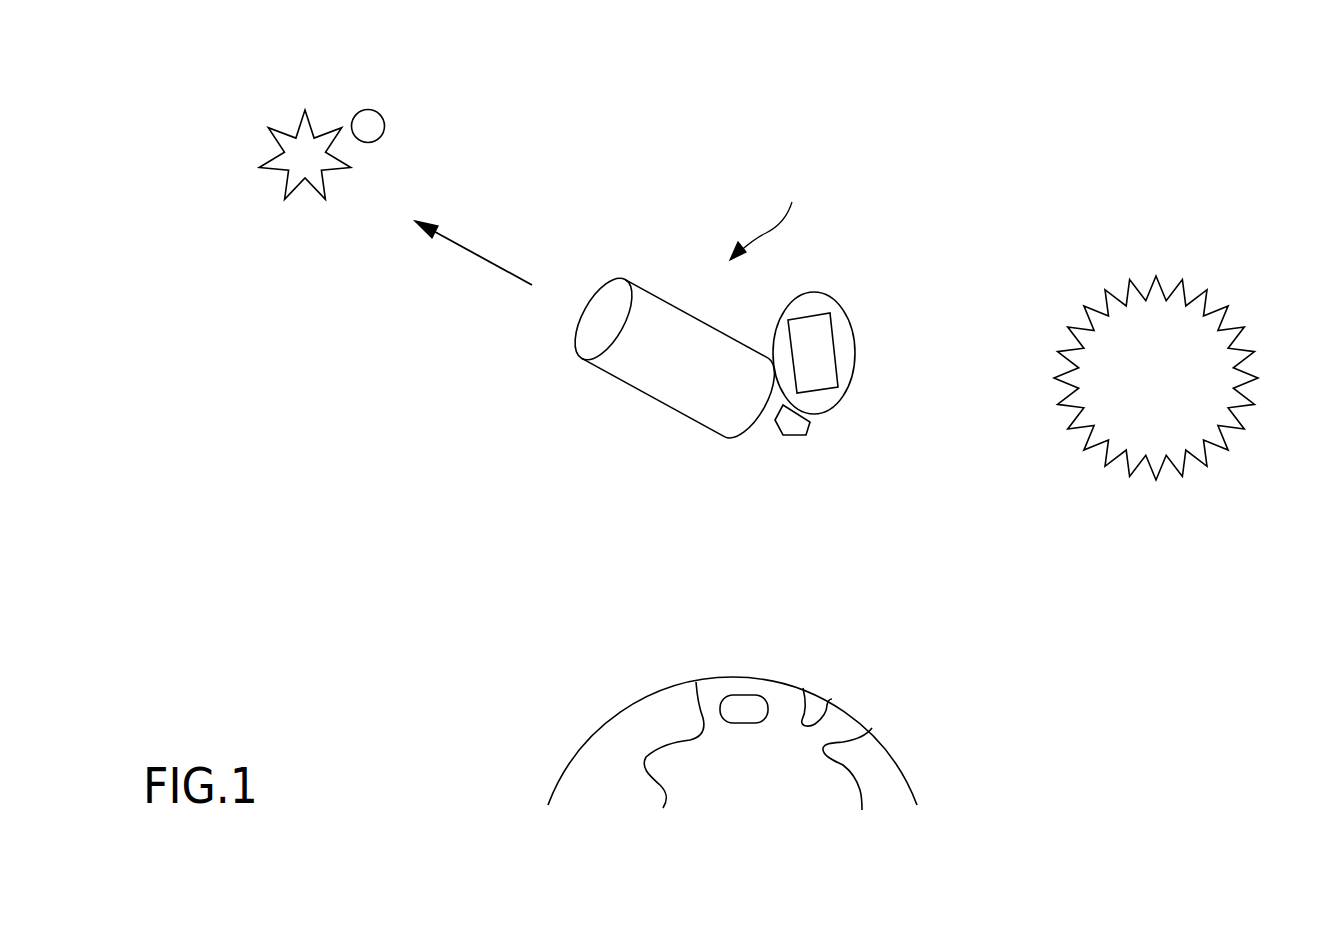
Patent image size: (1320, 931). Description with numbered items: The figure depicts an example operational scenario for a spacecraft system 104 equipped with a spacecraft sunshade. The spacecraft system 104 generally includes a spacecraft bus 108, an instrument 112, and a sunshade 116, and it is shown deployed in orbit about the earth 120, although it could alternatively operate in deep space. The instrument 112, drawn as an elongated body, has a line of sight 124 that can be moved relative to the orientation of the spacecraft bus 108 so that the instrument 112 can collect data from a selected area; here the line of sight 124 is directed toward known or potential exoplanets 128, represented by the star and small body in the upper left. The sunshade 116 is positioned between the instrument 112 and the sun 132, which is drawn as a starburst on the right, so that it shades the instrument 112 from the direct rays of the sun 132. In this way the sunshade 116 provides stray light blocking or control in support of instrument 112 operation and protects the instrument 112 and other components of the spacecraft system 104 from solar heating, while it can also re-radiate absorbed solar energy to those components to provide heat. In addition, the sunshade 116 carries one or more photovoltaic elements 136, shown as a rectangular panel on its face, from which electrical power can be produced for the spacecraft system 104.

The spacecraft system 104 is at (771, 214).
The spacecraft bus 108 is at (791, 436).
The instrument 112 is at (673, 410).
The sunshade 116 is at (847, 360).
The earth 120 is at (855, 708).
The line of sight 124 is at (487, 258).
The exoplanets 128 is at (381, 113).
The sun 132 is at (1180, 300).
The photovoltaic elements 136 is at (822, 330).